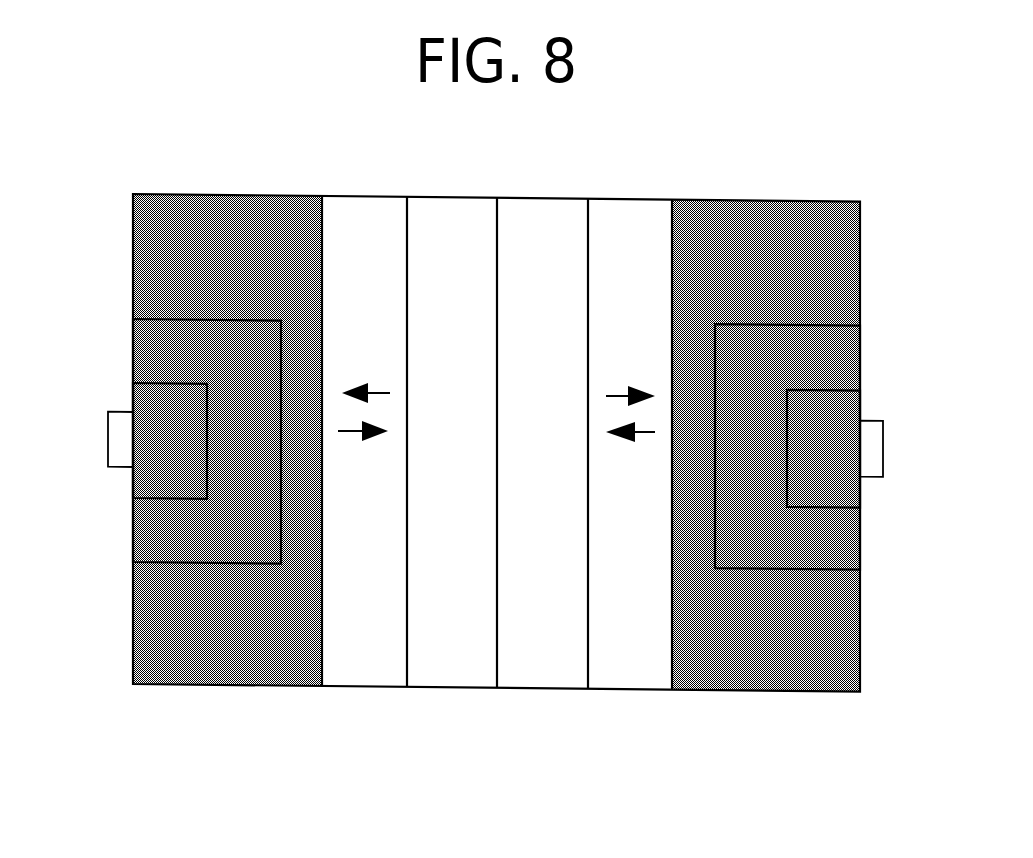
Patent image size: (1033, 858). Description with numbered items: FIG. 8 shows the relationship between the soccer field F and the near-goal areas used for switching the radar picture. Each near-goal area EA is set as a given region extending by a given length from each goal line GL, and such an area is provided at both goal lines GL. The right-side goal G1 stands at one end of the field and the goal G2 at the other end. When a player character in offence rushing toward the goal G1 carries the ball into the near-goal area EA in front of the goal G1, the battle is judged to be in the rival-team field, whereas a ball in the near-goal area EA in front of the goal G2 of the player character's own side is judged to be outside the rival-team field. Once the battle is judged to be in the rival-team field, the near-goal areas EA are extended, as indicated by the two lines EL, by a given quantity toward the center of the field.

The near-goal area EA is at (253, 208).
The extension line EL is at (413, 632).
The goal line GL is at (125, 651).
The right-side goal G1 is at (883, 449).
The goal of player character's side field G2 is at (108, 446).
The frame / boundary line F is at (343, 688).